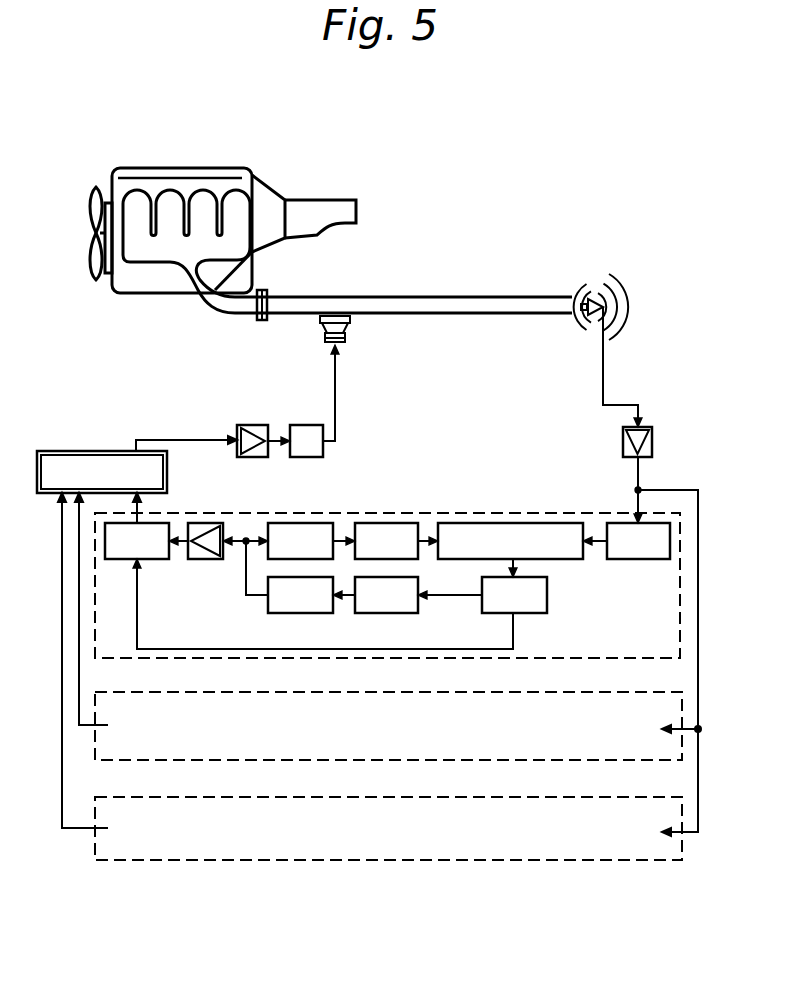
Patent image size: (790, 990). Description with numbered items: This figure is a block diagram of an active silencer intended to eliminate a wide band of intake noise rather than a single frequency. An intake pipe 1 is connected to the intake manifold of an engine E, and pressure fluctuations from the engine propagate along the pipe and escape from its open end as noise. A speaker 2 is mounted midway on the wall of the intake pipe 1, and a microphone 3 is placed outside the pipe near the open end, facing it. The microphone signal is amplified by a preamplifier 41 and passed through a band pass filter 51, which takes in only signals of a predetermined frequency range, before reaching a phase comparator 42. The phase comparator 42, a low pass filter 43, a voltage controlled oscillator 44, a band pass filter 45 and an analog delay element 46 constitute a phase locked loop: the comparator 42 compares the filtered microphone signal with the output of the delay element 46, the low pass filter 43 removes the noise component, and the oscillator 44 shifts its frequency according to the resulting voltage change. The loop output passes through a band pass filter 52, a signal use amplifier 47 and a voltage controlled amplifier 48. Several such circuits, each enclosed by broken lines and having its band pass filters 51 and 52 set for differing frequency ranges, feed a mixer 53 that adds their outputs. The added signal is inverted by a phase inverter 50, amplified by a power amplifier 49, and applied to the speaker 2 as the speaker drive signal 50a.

The engine E is at (238, 172).
The intake pipe 1 is at (445, 297).
The speaker 2 is at (346, 330).
The microphone 3 is at (590, 328).
The preamplifier 41 is at (622, 442).
The phase comparator 42 is at (510, 523).
The low pass filter 43 is at (533, 610).
The voltage controlled oscillator 44 is at (389, 613).
The band pass filter 45 is at (301, 613).
The analog delay element 46 is at (305, 522).
The signal use amplifier 47 is at (208, 522).
The voltage controlled amplifier 48 is at (165, 560).
The power amplifier 49 is at (258, 428).
The phase inverter 50 is at (308, 426).
The speaker drive signal 50a is at (340, 398).
The band pass filter 51 is at (625, 524).
The band pass filter 52 is at (394, 523).
The mixer 53 is at (97, 452).